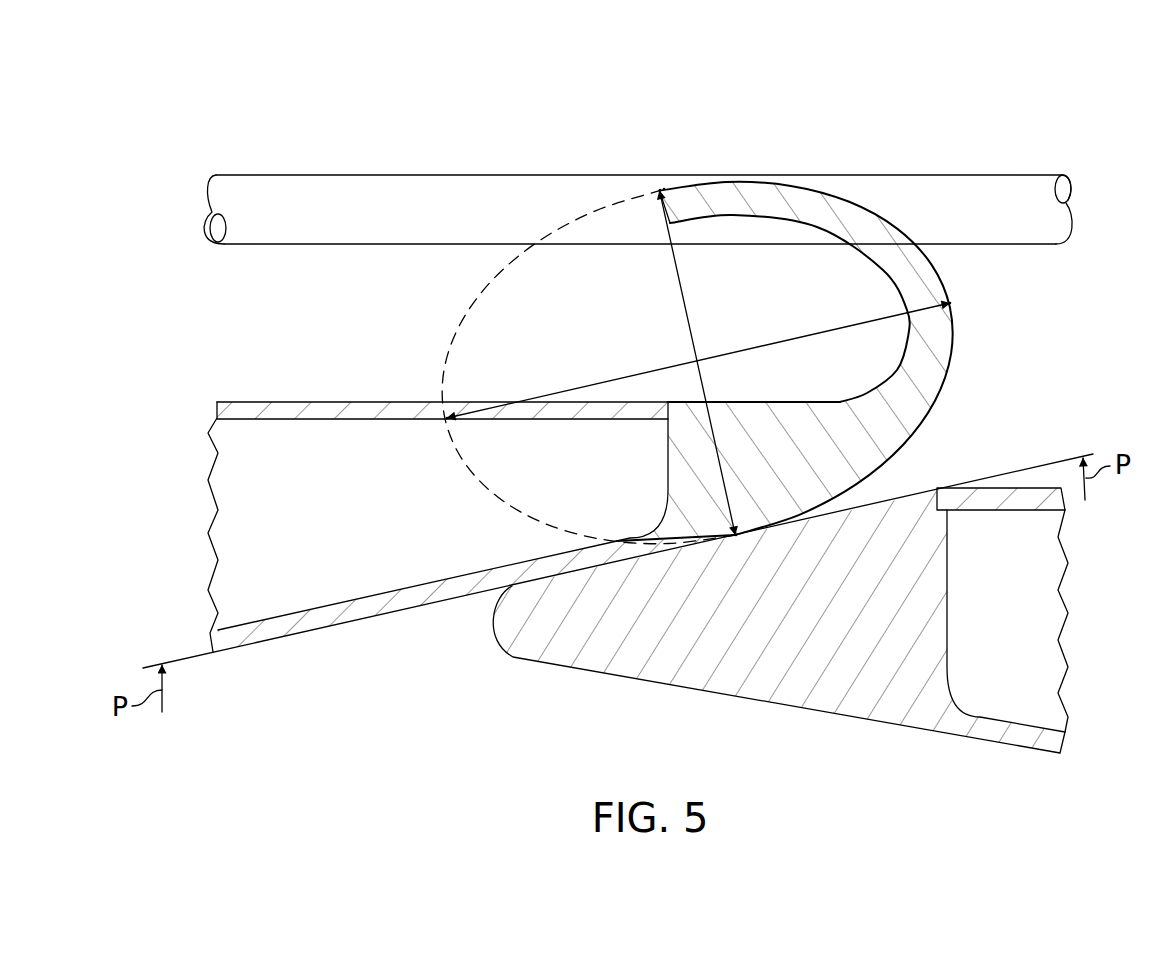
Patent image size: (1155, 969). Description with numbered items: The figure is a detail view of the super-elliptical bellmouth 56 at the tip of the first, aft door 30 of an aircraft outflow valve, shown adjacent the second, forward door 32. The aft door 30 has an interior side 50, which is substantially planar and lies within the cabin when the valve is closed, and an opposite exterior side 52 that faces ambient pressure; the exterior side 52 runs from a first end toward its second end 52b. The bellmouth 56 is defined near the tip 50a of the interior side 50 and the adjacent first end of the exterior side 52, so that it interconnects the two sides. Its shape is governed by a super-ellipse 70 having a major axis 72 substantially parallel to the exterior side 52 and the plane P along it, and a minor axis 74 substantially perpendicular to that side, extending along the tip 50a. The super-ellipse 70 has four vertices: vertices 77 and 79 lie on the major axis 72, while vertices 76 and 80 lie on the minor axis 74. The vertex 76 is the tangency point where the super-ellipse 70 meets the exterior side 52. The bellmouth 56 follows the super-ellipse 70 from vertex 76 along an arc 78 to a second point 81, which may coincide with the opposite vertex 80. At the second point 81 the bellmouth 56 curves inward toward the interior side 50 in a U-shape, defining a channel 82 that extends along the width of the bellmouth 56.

The first, aft door 30 is at (448, 166).
The second, forward door 32 is at (905, 745).
The interior side 50 is at (471, 514).
The tip of the interior side 50a is at (637, 422).
The exterior side 52 is at (296, 640).
The second end of the exterior side 52b is at (620, 548).
The bellmouth 56 is at (818, 328).
The super-ellipse 70 is at (474, 299).
The major axis 72 is at (787, 343).
The minor axis 74 is at (678, 278).
The vertex 76 is at (740, 539).
The vertex 77 is at (954, 302).
The arc 78 is at (957, 333).
The vertex 79 is at (445, 420).
The vertex 80 is at (660, 188).
The second point 81 is at (665, 188).
The channel 82 is at (880, 348).